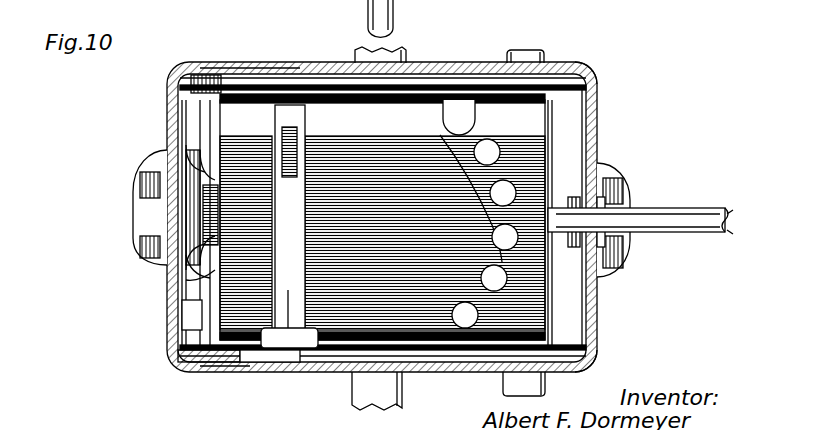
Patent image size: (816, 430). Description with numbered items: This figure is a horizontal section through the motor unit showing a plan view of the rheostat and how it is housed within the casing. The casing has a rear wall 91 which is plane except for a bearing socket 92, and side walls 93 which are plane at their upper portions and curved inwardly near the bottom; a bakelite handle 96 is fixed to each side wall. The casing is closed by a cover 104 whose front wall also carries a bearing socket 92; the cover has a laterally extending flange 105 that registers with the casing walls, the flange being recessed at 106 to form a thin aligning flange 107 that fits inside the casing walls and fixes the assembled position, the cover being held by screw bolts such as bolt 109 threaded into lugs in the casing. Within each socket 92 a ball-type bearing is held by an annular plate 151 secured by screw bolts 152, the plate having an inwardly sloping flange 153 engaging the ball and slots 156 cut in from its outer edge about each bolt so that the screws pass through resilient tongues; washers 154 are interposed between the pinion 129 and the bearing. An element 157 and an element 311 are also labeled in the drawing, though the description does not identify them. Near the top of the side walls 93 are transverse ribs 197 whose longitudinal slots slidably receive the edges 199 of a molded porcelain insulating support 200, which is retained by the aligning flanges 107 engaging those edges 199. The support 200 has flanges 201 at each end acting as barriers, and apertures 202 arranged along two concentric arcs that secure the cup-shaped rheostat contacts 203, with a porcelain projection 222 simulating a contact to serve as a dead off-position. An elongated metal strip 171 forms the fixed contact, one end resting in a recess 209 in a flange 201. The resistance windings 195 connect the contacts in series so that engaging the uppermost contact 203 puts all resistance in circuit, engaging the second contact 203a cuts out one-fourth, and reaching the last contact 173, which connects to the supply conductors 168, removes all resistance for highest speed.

The rear wall 91 is at (593, 336).
The bearing socket 92 is at (146, 200).
The side wall 93 is at (541, 50).
The handle 96 is at (407, 50).
The cover 104 is at (183, 318).
The laterally extending flange 105 is at (203, 63).
The recess 106 is at (247, 374).
The aligning flange 107 is at (259, 63).
The screw bolt 109 is at (196, 95).
The pinion 129 is at (200, 266).
The annular plate 151 is at (205, 230).
The screw bolt 152 is at (560, 305).
The inwardly sloping flange 153 is at (176, 269).
The washer 154 is at (205, 195).
The slot 156 is at (190, 216).
The housing end wall 157 is at (584, 102).
The supply conductors 168 is at (661, 212).
The elongated metal strip 171 is at (268, 345).
The last contact 173 is at (464, 322).
The resistance windings 195 is at (376, 210).
The rib 197 is at (563, 80).
The edge 199 is at (306, 77).
The insulating support 200 is at (227, 128).
The flange 201 is at (200, 110).
The aperture 202 is at (531, 195).
The rheostat contact 203 is at (449, 189).
The second rheostat contact 203a is at (545, 195).
The recess 209 is at (296, 348).
The porcelain projection 222 is at (459, 112).
The terminal 311 is at (370, 24).